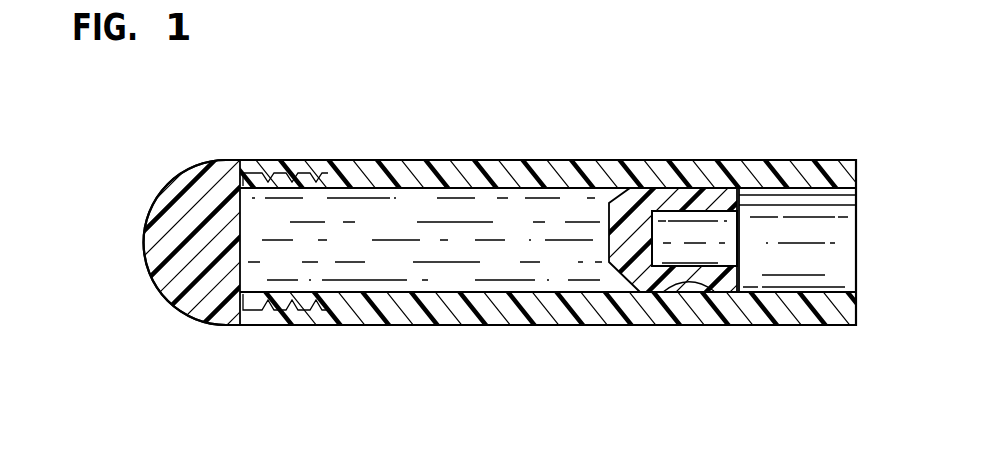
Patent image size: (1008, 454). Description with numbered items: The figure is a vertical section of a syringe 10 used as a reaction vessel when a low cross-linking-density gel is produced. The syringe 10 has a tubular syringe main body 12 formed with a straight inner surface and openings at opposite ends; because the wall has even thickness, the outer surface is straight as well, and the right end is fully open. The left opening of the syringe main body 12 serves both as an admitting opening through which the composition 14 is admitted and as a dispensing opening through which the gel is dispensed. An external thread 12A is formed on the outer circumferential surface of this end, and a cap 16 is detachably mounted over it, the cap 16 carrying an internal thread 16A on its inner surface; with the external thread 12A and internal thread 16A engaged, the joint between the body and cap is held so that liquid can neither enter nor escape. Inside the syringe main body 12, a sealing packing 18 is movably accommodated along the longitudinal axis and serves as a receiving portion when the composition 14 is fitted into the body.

The syringe 10 is at (618, 146).
The syringe main body 12 is at (752, 168).
The external thread 12A is at (277, 166).
The composition 14 is at (463, 206).
The cap 16 is at (165, 173).
The internal thread 16A is at (295, 308).
The sealing packing 18 is at (687, 272).